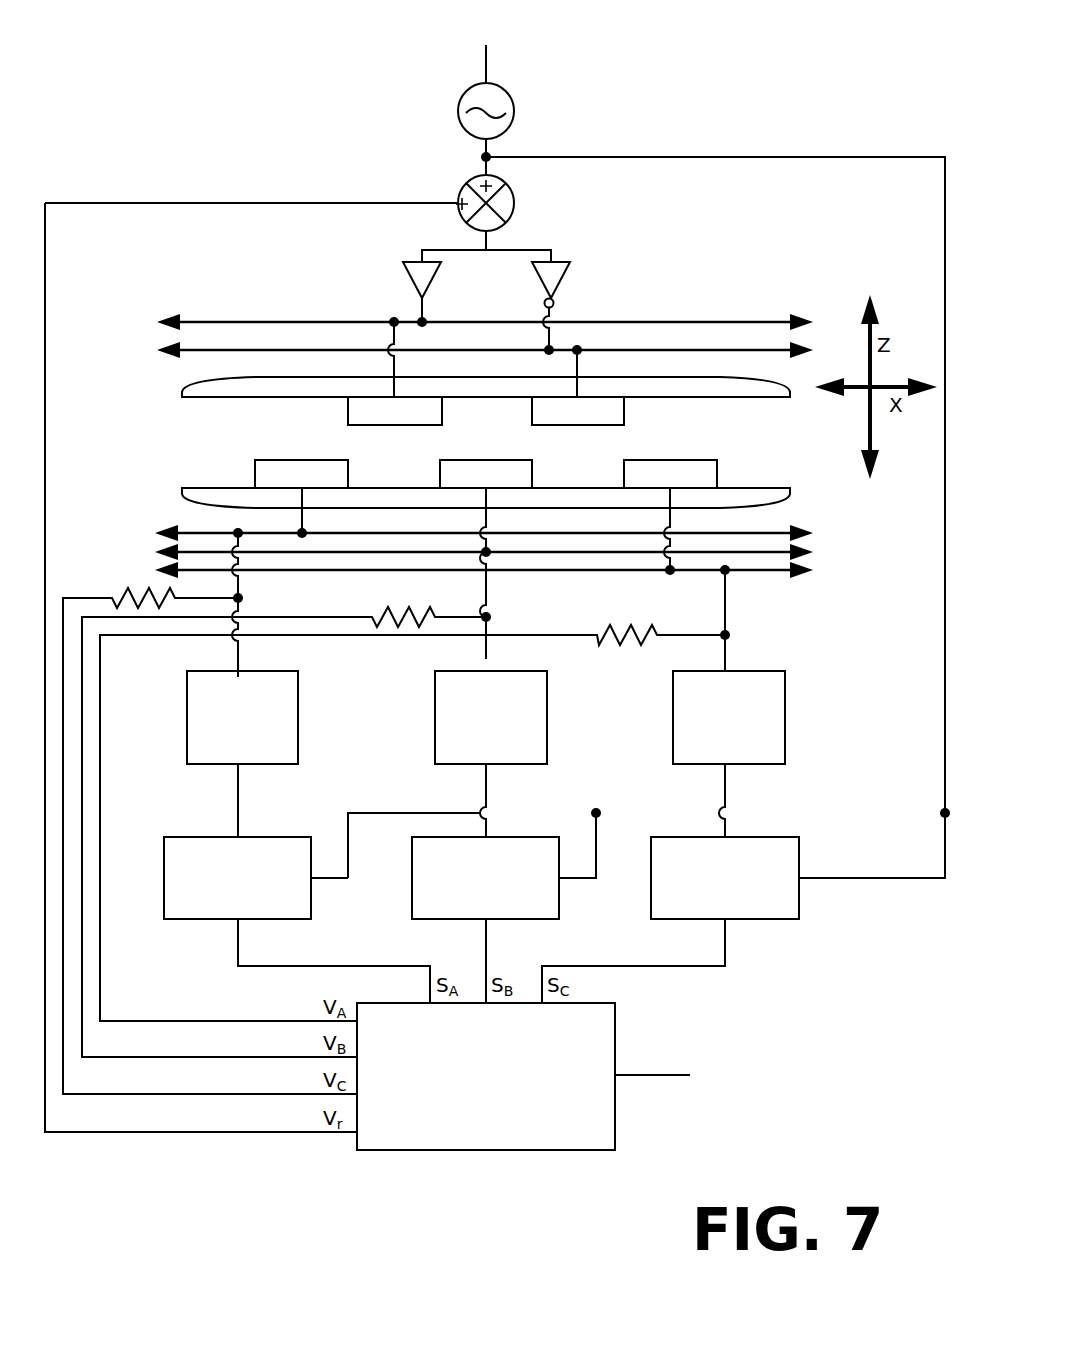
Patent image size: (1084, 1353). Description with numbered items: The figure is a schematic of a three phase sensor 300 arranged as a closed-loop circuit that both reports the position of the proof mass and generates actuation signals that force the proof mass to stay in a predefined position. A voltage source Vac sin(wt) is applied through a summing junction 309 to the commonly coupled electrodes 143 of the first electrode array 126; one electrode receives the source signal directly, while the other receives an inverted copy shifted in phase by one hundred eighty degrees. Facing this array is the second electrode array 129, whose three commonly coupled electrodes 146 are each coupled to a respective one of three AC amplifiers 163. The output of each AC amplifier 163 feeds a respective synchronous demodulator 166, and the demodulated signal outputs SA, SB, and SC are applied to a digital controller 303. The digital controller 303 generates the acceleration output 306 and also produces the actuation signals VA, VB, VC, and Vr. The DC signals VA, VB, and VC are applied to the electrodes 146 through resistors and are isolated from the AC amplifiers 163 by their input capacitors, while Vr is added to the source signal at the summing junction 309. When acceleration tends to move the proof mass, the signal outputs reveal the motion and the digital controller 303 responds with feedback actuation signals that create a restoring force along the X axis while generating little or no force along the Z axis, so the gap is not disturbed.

The three phase sensor 300 is at (188, 126).
The summing junction 309 is at (513, 210).
The first electrode array 126 is at (212, 418).
The electrodes 143 is at (624, 413).
The second electrode array 129 is at (212, 471).
The electrodes 146 is at (717, 470).
The AC amplifiers 163 is at (486, 717).
The synchronous demodulators 166 is at (481, 878).
The digital controller 303 is at (486, 1076).
The acceleration output 306 is at (716, 1076).